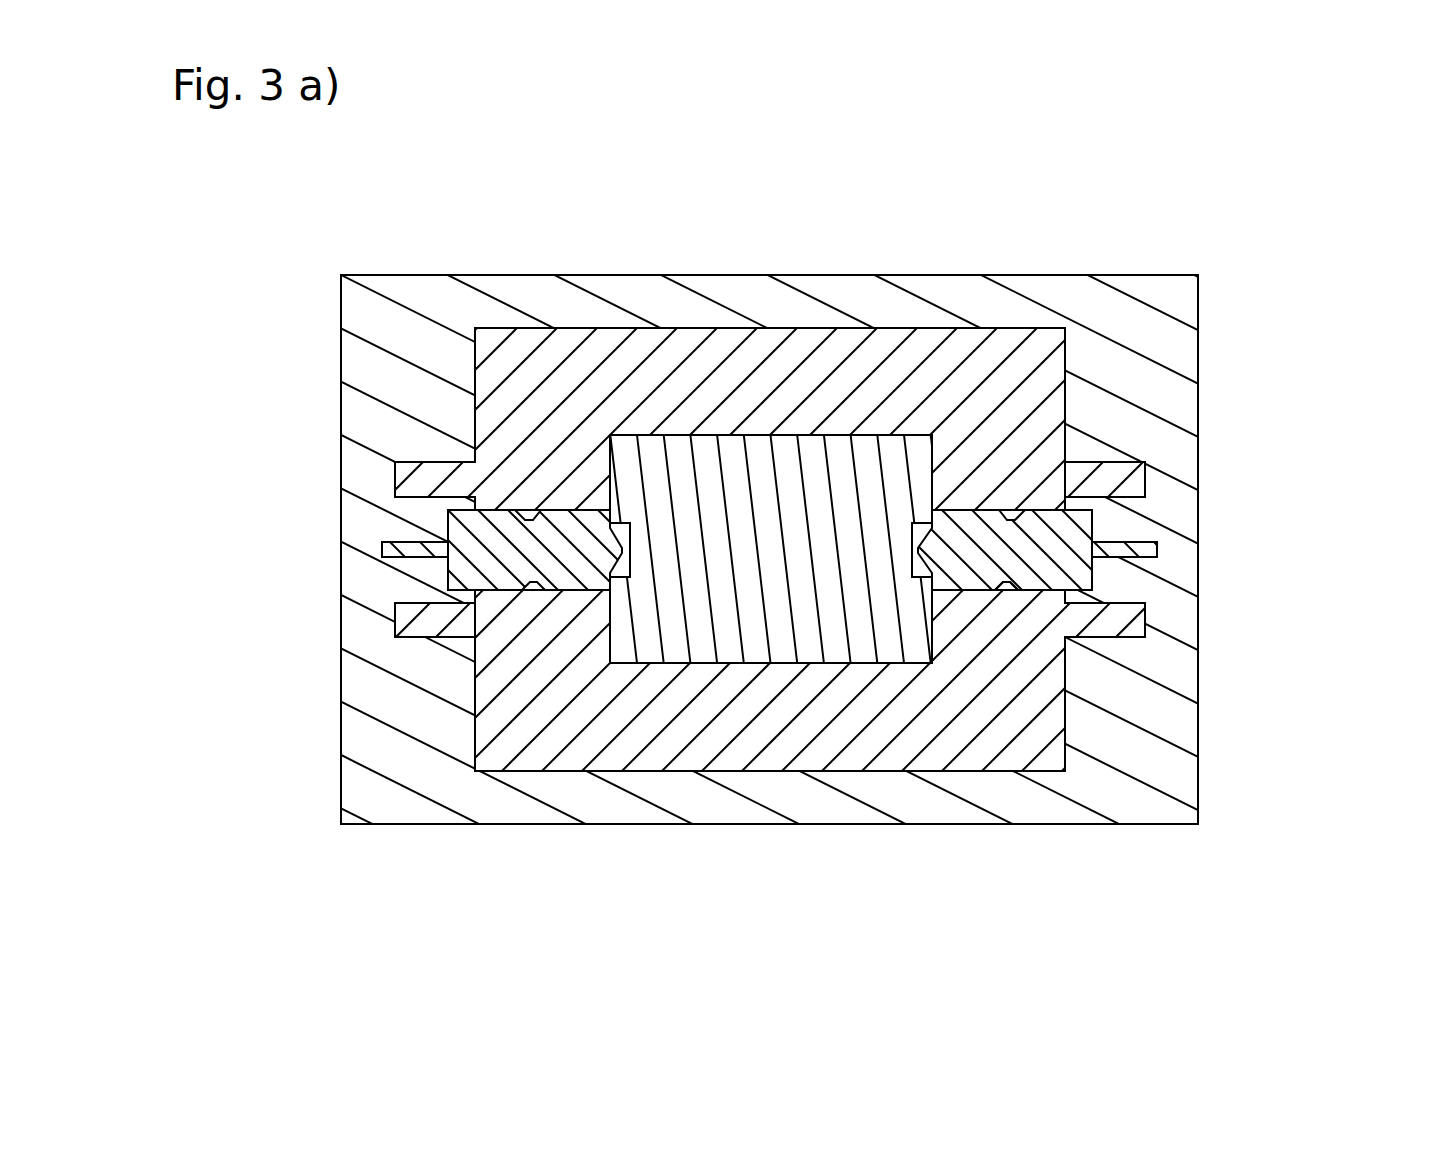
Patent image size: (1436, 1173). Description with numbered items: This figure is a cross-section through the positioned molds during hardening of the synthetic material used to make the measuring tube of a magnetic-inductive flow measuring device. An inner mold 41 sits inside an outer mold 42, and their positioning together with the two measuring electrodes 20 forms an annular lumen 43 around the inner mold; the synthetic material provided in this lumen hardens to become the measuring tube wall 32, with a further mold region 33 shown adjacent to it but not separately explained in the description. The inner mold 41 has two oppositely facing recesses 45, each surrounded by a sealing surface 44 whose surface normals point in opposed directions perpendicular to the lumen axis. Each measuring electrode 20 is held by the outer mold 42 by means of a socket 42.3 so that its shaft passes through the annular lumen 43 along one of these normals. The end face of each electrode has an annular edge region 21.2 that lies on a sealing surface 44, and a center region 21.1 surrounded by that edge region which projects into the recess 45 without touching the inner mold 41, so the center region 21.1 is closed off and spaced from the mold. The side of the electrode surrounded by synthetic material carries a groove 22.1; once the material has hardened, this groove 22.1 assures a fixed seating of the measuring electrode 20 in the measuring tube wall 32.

The measuring electrode 20 is at (462, 529).
The center region 21.1 is at (610, 583).
The annular edge region 21.2 is at (932, 514).
The groove 22.1 is at (1010, 585).
The measuring tube wall 32 is at (774, 722).
The upper housing part 33 is at (783, 436).
The inner mold 41 is at (702, 618).
The outer mold 42 is at (355, 770).
The socket 42.3 is at (478, 592).
The annular lumen 43 is at (918, 742).
The sealing surface 44 is at (610, 518).
The recess 45 is at (615, 585).